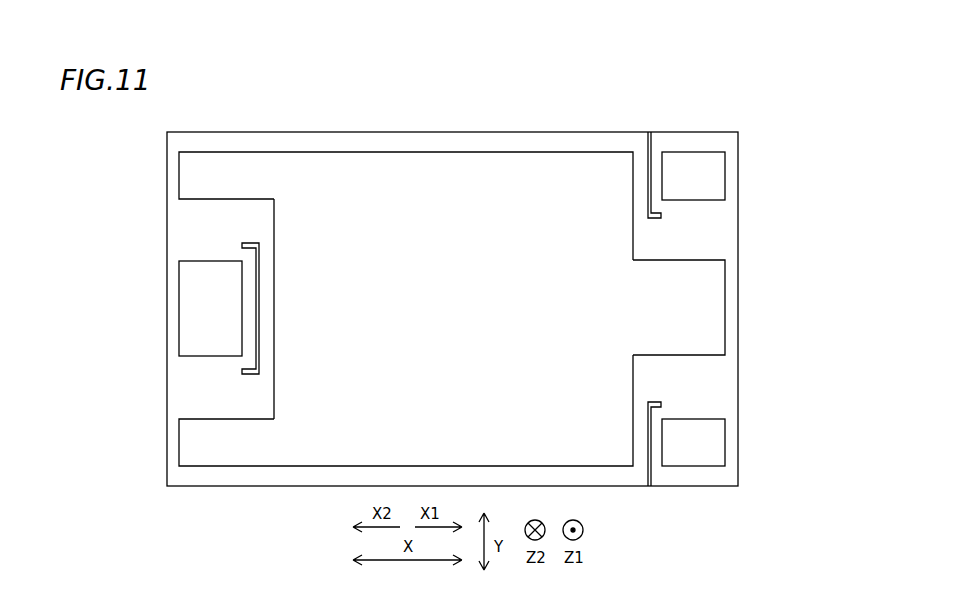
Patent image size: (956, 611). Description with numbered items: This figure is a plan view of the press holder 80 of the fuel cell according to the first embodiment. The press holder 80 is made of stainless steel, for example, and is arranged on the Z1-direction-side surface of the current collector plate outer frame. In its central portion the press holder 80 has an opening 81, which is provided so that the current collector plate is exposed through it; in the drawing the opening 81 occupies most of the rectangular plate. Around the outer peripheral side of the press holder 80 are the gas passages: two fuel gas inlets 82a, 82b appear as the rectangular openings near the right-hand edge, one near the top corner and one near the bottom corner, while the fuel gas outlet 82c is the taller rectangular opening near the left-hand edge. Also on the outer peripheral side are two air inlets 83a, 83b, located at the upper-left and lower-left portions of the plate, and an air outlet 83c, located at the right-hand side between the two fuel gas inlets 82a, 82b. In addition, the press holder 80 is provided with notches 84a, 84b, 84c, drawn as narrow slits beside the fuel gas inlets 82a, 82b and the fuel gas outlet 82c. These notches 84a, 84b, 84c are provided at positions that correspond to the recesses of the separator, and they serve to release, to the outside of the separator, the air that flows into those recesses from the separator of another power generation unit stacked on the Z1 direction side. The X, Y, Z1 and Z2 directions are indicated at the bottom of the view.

The press holder 80 is at (730, 113).
The opening 81 is at (556, 164).
The fuel gas inlet 82a is at (724, 171).
The fuel gas inlet 82b is at (724, 447).
The fuel gas outlet 82c is at (183, 296).
The air inlet 83a is at (180, 171).
The air inlet 83b is at (180, 437).
The air outlet 83c is at (724, 307).
The notch 84a is at (647, 157).
The notch 84b is at (646, 470).
The notch 84c is at (262, 306).